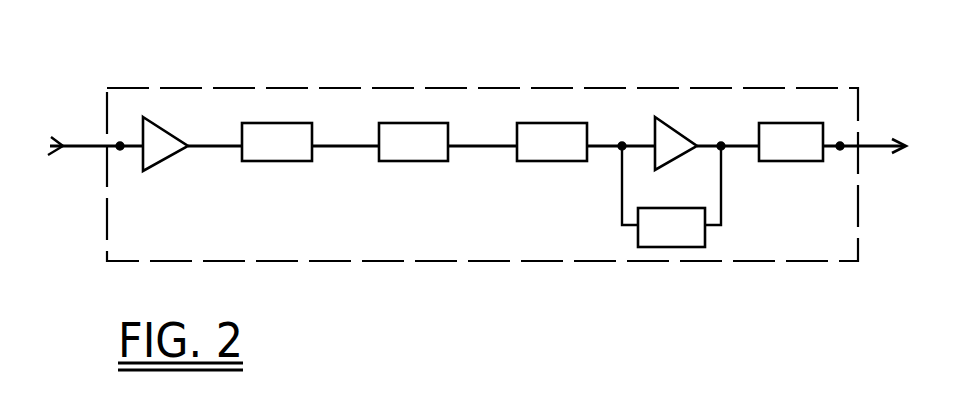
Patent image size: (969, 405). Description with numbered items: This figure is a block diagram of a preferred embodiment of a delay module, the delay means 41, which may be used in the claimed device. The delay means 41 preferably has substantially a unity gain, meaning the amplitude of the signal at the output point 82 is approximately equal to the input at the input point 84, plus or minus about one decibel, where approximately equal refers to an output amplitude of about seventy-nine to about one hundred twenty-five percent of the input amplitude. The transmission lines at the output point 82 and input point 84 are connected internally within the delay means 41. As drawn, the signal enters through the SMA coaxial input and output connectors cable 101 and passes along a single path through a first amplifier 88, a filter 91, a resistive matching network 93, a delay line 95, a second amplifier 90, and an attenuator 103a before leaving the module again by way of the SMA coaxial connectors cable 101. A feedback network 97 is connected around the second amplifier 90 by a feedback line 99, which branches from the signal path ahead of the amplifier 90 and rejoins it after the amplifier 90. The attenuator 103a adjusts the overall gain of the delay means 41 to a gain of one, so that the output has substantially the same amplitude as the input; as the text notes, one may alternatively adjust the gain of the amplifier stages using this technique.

The delay means 41 is at (386, 84).
The output point 82 is at (840, 146).
The input point 84 is at (120, 146).
The amplifier 88 is at (163, 160).
The amplifier 90 is at (673, 160).
The filter 91 is at (270, 161).
The resistive matching network 93 is at (405, 161).
The delay line 95 is at (545, 161).
The feedback network 97 is at (683, 240).
The feedback line 99 is at (622, 203).
The SMA coaxial input and output connectors cable 101 is at (73, 112).
The attenuator 103a is at (808, 161).